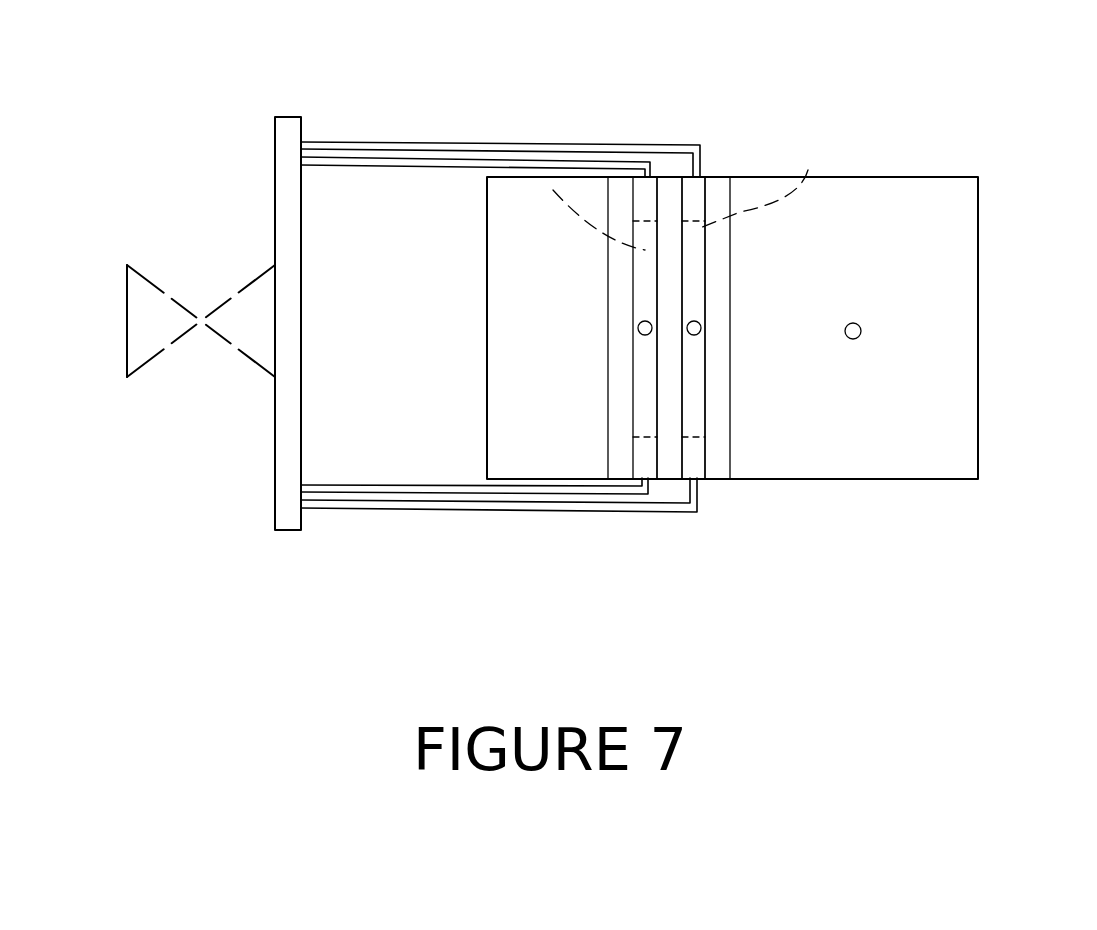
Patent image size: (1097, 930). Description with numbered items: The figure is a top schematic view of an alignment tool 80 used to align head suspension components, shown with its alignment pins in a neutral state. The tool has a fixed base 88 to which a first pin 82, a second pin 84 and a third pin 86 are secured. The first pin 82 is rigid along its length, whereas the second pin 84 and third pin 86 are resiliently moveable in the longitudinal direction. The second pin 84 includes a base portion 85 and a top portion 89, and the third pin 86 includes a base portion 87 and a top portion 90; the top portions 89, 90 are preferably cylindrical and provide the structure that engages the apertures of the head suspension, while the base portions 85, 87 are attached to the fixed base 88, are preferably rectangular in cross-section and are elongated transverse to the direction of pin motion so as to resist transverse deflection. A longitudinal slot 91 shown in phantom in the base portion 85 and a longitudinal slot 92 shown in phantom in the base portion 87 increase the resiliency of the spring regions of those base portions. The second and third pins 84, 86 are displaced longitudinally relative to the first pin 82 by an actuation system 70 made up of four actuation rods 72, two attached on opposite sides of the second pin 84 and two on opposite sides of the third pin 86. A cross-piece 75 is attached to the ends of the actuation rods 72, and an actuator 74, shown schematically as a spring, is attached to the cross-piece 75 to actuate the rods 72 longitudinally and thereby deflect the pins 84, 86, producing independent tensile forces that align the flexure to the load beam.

The actuation system 70 is at (432, 552).
The actuation rods 72 is at (402, 158).
The actuator 74 is at (165, 297).
The cross-piece 75 is at (288, 453).
The alignment tool 80 is at (911, 146).
The first pin 82 is at (860, 327).
The second pin 84 is at (705, 176).
The base portion 85 is at (692, 452).
The third pin 86 is at (660, 176).
The base portion 87 is at (640, 452).
The fixed base 88 is at (820, 434).
The top portion 89 is at (700, 328).
The top portion 90 is at (640, 328).
The longitudinal slot 91 is at (808, 170).
The longitudinal slot 92 is at (553, 190).